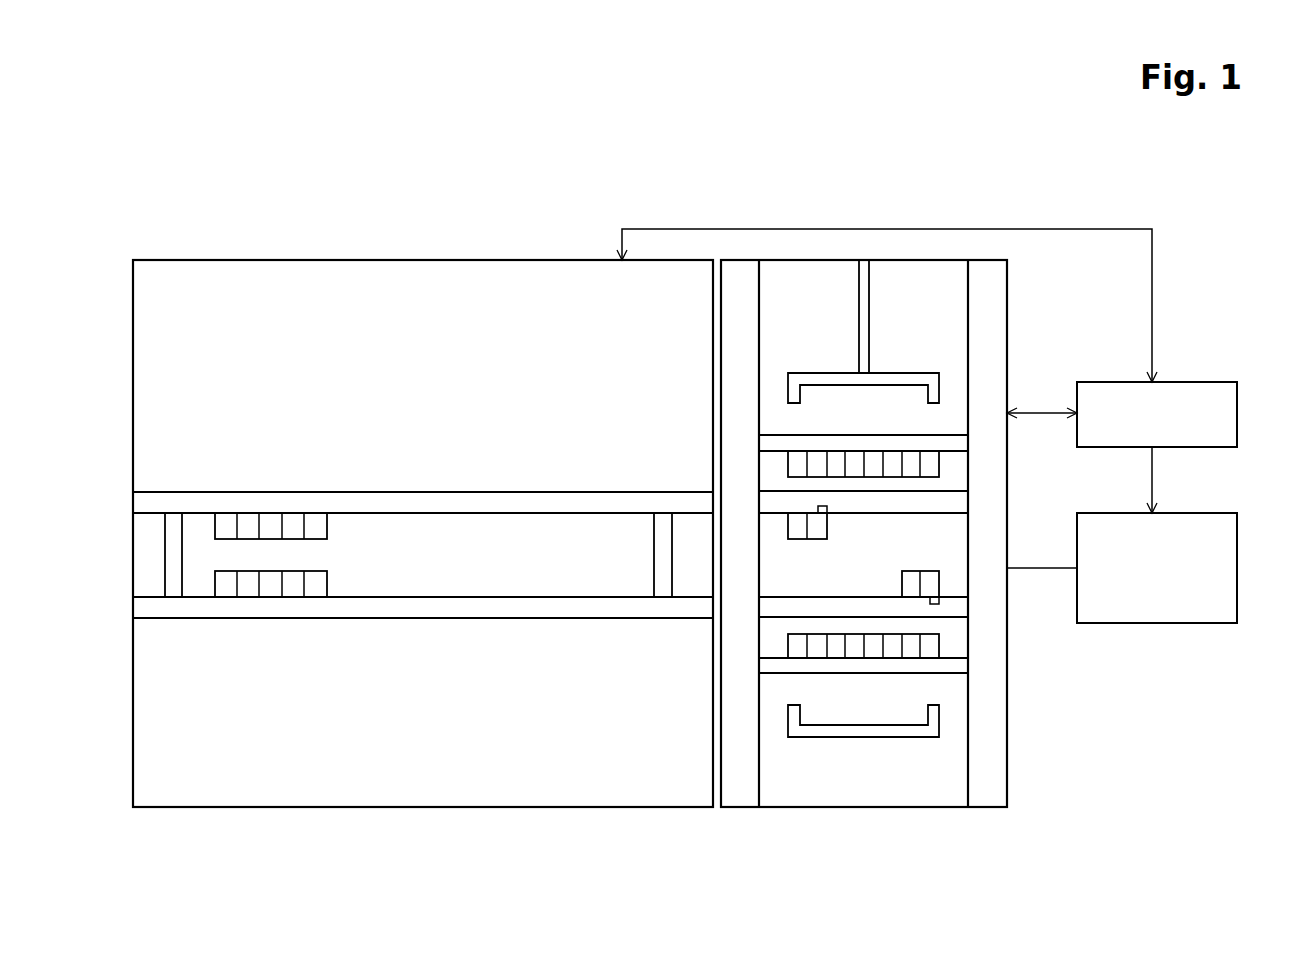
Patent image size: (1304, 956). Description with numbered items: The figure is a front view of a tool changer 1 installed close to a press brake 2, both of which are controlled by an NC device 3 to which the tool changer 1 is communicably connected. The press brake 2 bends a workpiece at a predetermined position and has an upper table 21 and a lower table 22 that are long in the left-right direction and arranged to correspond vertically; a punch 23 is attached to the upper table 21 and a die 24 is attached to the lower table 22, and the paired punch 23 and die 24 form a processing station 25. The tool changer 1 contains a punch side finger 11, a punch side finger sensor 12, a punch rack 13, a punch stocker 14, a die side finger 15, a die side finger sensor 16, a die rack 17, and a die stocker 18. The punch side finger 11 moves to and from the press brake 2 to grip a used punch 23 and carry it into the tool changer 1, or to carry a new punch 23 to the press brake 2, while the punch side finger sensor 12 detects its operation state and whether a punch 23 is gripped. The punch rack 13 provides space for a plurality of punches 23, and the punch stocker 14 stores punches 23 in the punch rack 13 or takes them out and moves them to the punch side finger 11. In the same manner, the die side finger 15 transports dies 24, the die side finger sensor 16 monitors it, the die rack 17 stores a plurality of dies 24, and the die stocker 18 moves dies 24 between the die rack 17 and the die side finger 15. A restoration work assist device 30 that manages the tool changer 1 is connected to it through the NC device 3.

The tool changer 1 is at (866, 212).
The press brake 2 is at (383, 216).
The NC device 3 is at (1165, 381).
The punch side finger 11 is at (827, 528).
The punch side finger sensor 12 is at (818, 506).
The punch rack 13 is at (862, 435).
The punch stocker 14 is at (905, 373).
The die side finger 15 is at (902, 579).
The die side finger sensor 16 is at (930, 606).
The die rack 17 is at (846, 674).
The die stocker 18 is at (890, 737).
The upper table 21 is at (133, 502).
The lower table 22 is at (133, 606).
The punch 23 is at (327, 527).
The die 24 is at (327, 580).
The processing station 25 is at (273, 465).
The restoration work assist device 30 is at (1165, 514).